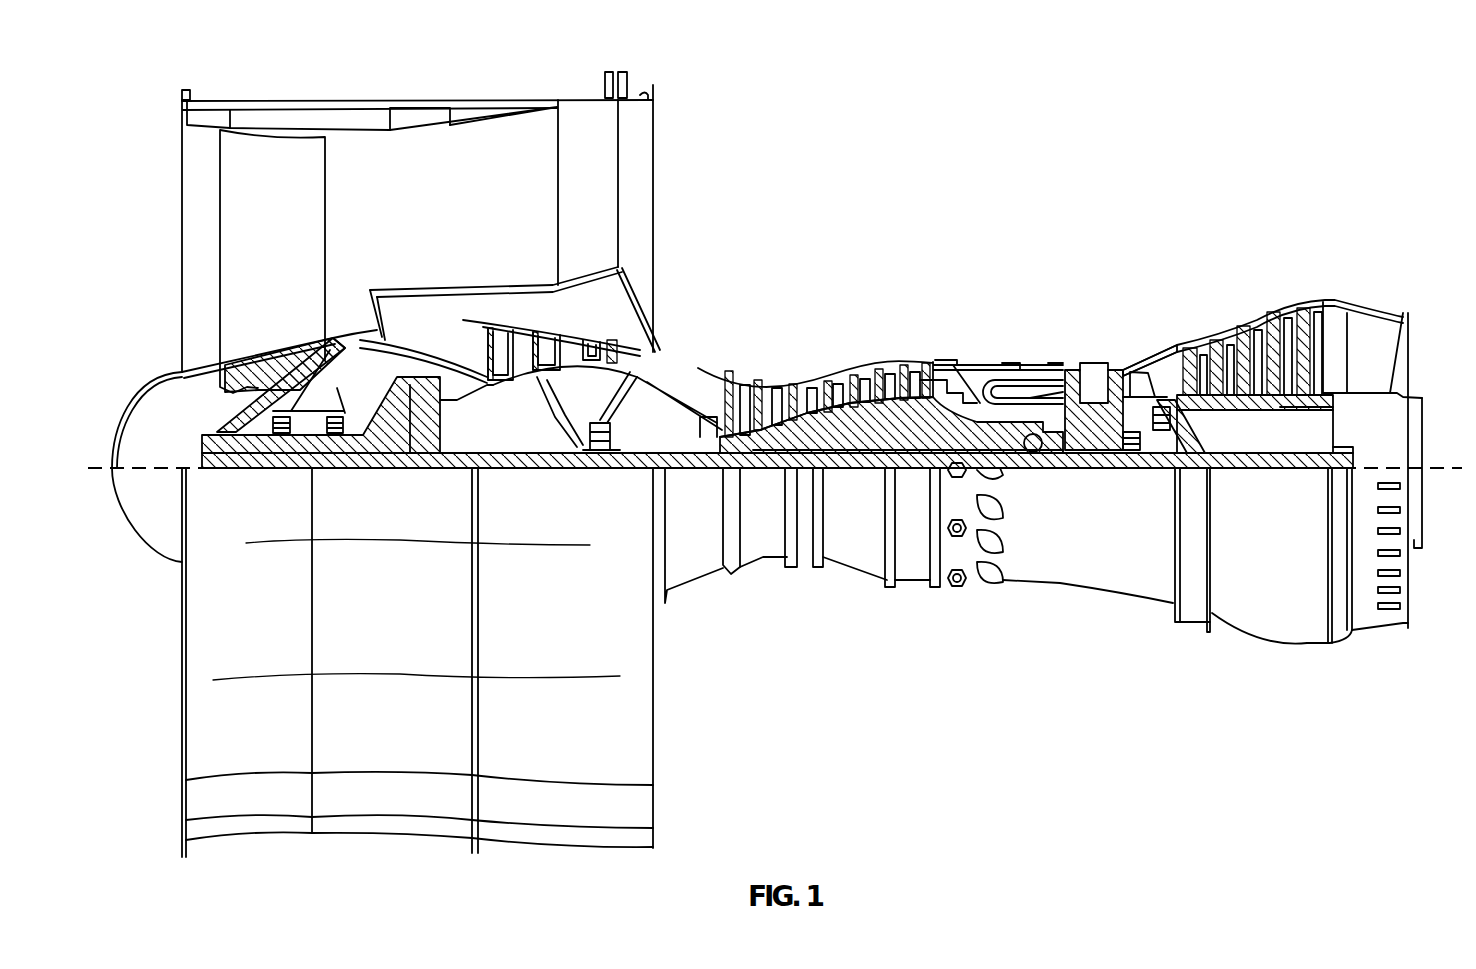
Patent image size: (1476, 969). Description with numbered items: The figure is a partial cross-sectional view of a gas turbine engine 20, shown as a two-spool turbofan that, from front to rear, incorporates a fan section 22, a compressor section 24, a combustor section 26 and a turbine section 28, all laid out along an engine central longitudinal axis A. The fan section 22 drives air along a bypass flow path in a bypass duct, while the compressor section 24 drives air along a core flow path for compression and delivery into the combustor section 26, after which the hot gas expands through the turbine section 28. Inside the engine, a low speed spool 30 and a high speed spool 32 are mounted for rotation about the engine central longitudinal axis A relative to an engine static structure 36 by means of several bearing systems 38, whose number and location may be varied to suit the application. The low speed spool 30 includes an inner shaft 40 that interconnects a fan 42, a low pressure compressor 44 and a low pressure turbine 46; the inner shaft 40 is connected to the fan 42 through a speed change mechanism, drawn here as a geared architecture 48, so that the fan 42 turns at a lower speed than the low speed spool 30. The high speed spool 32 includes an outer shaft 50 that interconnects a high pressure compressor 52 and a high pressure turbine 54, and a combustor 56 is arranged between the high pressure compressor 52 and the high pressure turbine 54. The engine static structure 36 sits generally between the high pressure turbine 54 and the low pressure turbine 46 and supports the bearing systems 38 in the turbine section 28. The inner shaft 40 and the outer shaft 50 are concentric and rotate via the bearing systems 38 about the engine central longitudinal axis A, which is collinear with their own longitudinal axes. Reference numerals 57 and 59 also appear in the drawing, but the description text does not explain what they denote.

The gas turbine engine 20 is at (1230, 136).
The fan section 22 is at (255, 80).
The compressor section 24 is at (728, 362).
The combustor section 26 is at (1012, 328).
The turbine section 28 is at (1146, 307).
The low speed spool 30 is at (877, 472).
The high speed spool 32 is at (927, 417).
The engine static structure 36 is at (917, 588).
The bearing systems 38 is at (602, 447).
The inner shaft 40 is at (667, 460).
The fan 42 is at (297, 237).
The low pressure compressor 44 is at (568, 347).
The low pressure turbine 46 is at (1260, 327).
The geared architecture 48 is at (422, 437).
The outer shaft 50 is at (1043, 440).
The high pressure compressor 52 is at (832, 382).
The high pressure turbine 54 is at (1097, 364).
The combustor 56 is at (1017, 385).
The mid-turbine frame 57 is at (1166, 347).
The airfoils 59 is at (1165, 390).
The engine central longitudinal axis A is at (1433, 466).